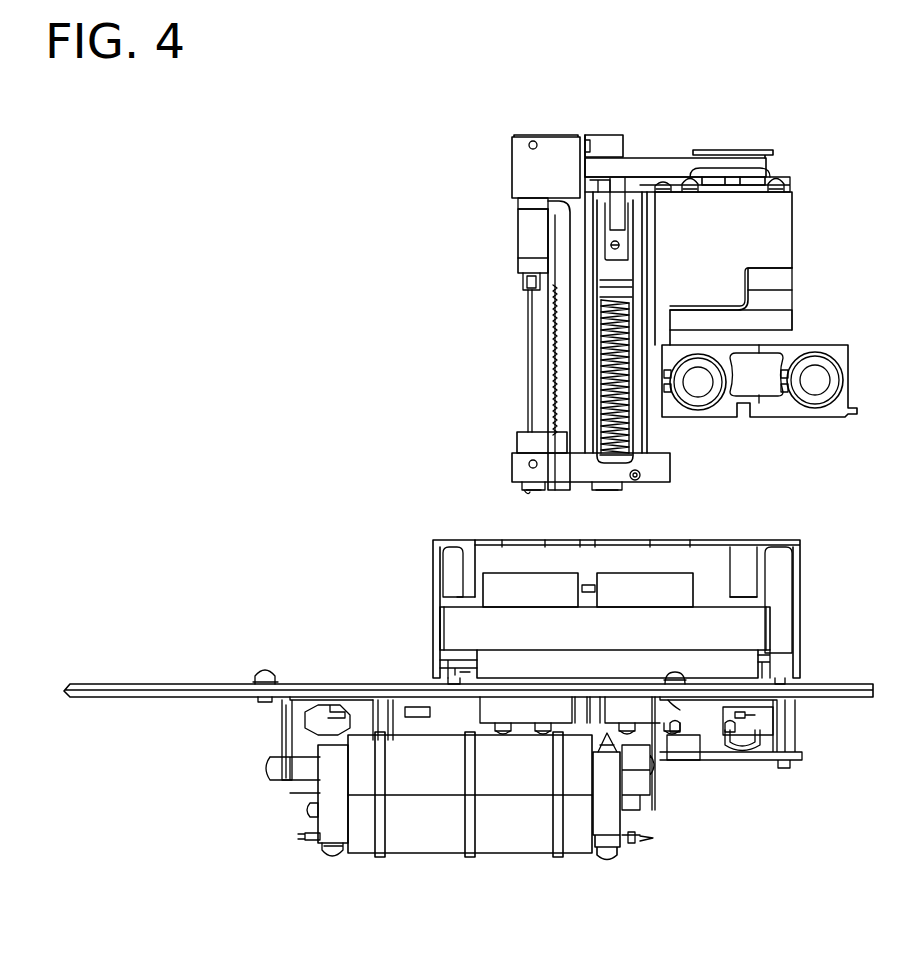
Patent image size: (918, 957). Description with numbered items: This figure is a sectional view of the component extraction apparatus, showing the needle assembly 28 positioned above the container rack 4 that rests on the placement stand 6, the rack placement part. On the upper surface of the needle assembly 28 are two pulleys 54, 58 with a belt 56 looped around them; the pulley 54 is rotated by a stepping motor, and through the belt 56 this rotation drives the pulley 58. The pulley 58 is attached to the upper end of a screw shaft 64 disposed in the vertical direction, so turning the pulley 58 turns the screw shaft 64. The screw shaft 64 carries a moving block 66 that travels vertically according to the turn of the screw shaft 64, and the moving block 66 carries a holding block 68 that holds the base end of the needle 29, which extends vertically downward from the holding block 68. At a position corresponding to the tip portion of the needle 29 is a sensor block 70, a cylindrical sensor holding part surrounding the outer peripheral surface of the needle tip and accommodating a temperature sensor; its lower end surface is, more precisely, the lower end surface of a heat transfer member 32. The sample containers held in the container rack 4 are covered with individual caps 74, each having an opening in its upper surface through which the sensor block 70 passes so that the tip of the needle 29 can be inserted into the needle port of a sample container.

The container rack 4 is at (752, 630).
The placement stand 6 is at (205, 683).
The needle assembly 28 is at (795, 160).
The needle 29 is at (528, 343).
The heat transfer member 32 is at (527, 494).
The pulley 54 is at (730, 150).
The belt 56 is at (652, 165).
The pulley 58 is at (605, 142).
The screw shaft 64 is at (618, 423).
The moving block 66 is at (558, 228).
The holding block 68 is at (530, 250).
The sensor block 70 is at (522, 442).
The cap 74 is at (670, 587).